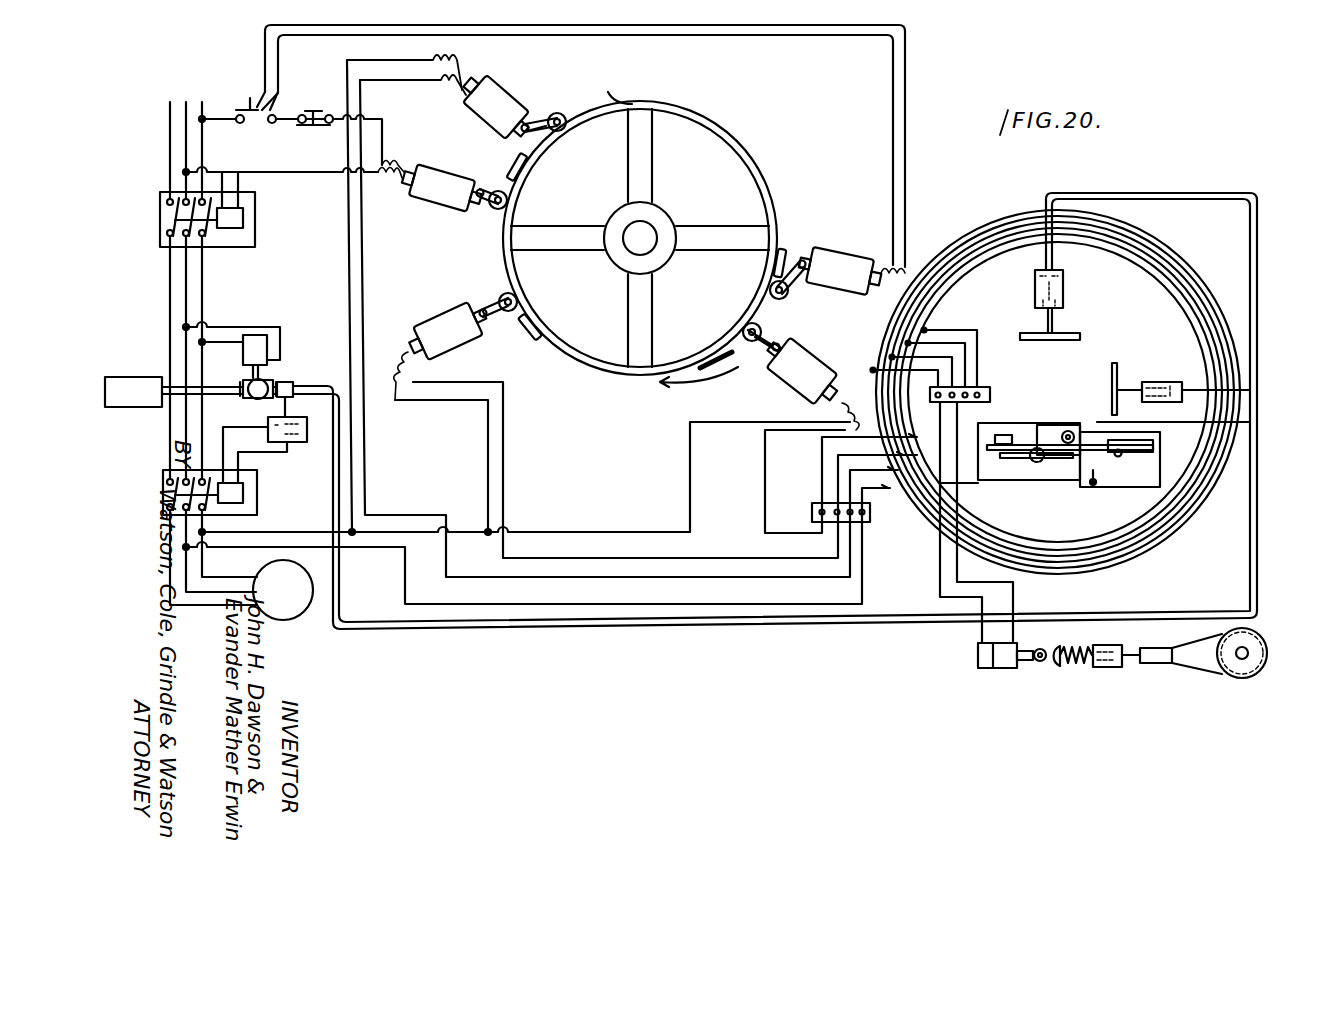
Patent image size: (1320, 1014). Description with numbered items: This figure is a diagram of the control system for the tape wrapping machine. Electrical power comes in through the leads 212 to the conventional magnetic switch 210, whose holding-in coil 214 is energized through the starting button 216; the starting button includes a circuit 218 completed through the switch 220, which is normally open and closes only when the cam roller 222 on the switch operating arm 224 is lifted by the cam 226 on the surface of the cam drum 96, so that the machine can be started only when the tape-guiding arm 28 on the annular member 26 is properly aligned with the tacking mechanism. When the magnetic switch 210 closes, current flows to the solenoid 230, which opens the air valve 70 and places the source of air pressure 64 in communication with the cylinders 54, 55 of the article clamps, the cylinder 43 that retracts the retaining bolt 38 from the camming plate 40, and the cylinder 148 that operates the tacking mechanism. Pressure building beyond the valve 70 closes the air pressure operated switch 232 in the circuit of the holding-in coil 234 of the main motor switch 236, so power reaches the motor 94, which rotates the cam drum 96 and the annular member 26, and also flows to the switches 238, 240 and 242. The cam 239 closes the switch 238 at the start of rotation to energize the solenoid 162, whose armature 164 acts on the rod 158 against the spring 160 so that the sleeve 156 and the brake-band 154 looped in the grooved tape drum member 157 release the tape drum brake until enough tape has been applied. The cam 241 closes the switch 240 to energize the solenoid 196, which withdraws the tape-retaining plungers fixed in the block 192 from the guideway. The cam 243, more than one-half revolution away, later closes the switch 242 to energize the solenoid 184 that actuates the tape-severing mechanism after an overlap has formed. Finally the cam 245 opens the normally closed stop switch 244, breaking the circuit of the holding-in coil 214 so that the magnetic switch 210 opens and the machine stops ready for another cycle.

The annular member 26 is at (984, 233).
The tape-guiding arm 28 is at (990, 447).
The retractable bolt 38 is at (1116, 450).
The camming plate 40 is at (1045, 458).
The cylinder-piston arrangement 43 is at (1066, 431).
The cylinder-piston arrangement 54 is at (1035, 296).
The cylinder-piston arrangement 55 is at (1156, 370).
The reservoir 64 is at (127, 370).
The solenoid controlled air valve 70 is at (262, 388).
The motor 94 is at (268, 582).
The cam drum 96 is at (712, 110).
The cylinder-piston arrangement 148 is at (1034, 462).
The brake-band 154 is at (1205, 676).
The sleeve 156 is at (1158, 664).
The pulley 157 is at (1246, 651).
The rod 158 is at (1125, 670).
The spring 160 is at (1075, 670).
The solenoid 162 is at (1000, 668).
The armature 164 is at (1036, 650).
The solenoid 184 is at (1096, 484).
The block 192 is at (1002, 435).
The solenoid 196 is at (1140, 437).
The magnetic switch 210 is at (160, 204).
The leads 212 is at (200, 145).
The holding-in coil 214 is at (243, 218).
The starting button 216 is at (248, 98).
The circuit 218 is at (908, 188).
The switch 220 is at (838, 258).
The cam roller 222 is at (778, 300).
The switch operating arm 224 is at (792, 262).
The cam 226 is at (774, 266).
The solenoid 230 is at (262, 350).
The air pressure operated switch 232 is at (268, 426).
The holding-in coil 234 is at (243, 490).
The main motor switch 236 is at (257, 506).
The switch 238 is at (497, 94).
The cam 239 is at (545, 140).
The switch 240 is at (421, 320).
The cam 241 is at (536, 329).
The switch 242 is at (784, 378).
The cam 243 is at (607, 83).
The stop switch 244 is at (435, 172).
The cam 245 is at (513, 173).